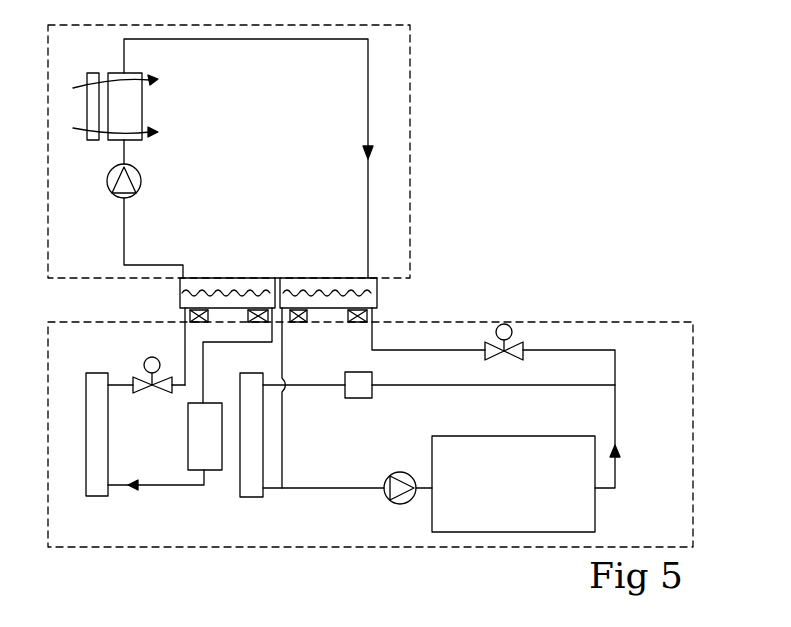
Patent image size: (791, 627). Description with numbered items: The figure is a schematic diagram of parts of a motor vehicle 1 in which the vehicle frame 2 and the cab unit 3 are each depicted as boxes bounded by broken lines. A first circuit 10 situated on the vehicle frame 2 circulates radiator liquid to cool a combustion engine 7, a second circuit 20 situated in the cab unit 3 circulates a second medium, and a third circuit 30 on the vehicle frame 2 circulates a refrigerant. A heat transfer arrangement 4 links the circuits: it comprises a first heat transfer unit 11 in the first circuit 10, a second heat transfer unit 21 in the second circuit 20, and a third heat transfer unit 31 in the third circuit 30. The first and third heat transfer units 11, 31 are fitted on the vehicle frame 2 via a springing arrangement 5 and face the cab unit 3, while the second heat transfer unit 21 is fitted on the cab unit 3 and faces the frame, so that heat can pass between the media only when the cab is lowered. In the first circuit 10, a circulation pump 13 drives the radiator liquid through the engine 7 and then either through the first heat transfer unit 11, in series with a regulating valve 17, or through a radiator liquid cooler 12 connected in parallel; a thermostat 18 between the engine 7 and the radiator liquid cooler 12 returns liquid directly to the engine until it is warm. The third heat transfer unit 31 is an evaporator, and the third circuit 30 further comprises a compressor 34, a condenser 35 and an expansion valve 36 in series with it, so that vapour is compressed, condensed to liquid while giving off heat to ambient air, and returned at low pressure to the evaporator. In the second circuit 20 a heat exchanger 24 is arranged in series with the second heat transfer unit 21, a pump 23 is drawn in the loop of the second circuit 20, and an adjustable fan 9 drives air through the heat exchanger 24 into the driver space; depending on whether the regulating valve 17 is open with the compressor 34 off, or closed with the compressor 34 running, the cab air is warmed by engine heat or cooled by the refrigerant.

The vehicle 1 is at (499, 205).
The vehicle frame 2 is at (635, 328).
The cab unit 3 is at (407, 117).
The heat transfer arrangement 4 is at (322, 265).
The springing arrangement 5 is at (260, 323).
The combustion engine 7 is at (588, 513).
The adjustable fan 9 is at (87, 105).
The first circuit 10 is at (630, 403).
The first heat transfer unit 11 is at (313, 298).
The radiator liquid cooler 12 is at (248, 467).
The circulation pump 13 is at (404, 478).
The regulating valve 17 is at (515, 348).
The thermostat 18 is at (350, 392).
The second circuit 20 is at (382, 81).
The second heat transfer unit 21 is at (253, 285).
The pump 23 is at (142, 176).
The heat exchanger 24 is at (143, 107).
The third circuit 30 is at (166, 502).
The third heat transfer unit 31 is at (232, 302).
The compressor 34 is at (200, 438).
The condenser 35 is at (98, 413).
The expansion valve 36 is at (140, 377).